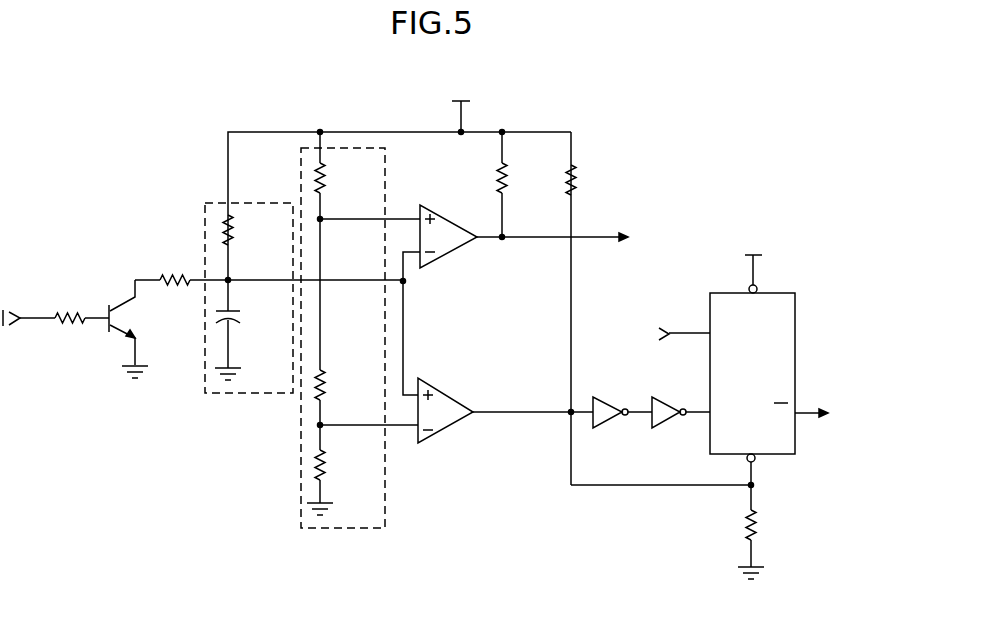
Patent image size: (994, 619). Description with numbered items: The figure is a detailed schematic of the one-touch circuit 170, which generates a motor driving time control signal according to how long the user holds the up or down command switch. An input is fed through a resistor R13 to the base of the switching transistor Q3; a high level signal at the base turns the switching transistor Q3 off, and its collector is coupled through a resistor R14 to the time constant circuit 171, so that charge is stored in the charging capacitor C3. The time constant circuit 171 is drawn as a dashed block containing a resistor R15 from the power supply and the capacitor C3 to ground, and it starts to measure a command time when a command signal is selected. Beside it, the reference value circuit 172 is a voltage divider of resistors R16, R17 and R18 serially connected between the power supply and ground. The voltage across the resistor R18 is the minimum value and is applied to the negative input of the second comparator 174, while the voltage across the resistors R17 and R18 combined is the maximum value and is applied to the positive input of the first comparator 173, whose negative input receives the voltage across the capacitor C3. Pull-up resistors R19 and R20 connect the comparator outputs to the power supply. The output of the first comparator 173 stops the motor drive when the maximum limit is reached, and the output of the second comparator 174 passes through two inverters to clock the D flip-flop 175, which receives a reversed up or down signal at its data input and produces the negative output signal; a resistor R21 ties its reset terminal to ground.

The one-touch circuit 170 is at (152, 95).
The time constant circuit 171 is at (249, 324).
The reference value circuit 172 is at (343, 358).
The first comparator 173 is at (450, 213).
The second comparator 174 is at (441, 384).
The D flip-flop 175 is at (710, 368).
The resistor R13 is at (64, 307).
The resistor R14 is at (174, 269).
The resistor R15 is at (252, 230).
The resistor R16 is at (344, 179).
The resistor R17 is at (343, 385).
The resistor R18 is at (342, 466).
The resistor R19 is at (525, 179).
The resistor R20 is at (595, 180).
The resistor R21 is at (774, 525).
The charging capacitor C3 is at (244, 330).
The switching transistor Q3 is at (138, 329).